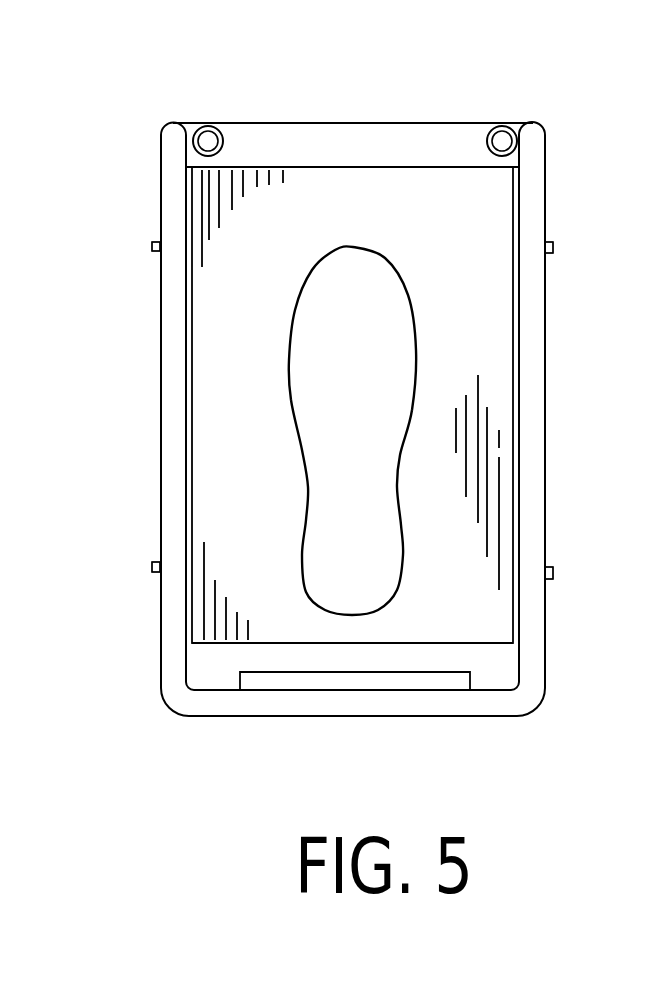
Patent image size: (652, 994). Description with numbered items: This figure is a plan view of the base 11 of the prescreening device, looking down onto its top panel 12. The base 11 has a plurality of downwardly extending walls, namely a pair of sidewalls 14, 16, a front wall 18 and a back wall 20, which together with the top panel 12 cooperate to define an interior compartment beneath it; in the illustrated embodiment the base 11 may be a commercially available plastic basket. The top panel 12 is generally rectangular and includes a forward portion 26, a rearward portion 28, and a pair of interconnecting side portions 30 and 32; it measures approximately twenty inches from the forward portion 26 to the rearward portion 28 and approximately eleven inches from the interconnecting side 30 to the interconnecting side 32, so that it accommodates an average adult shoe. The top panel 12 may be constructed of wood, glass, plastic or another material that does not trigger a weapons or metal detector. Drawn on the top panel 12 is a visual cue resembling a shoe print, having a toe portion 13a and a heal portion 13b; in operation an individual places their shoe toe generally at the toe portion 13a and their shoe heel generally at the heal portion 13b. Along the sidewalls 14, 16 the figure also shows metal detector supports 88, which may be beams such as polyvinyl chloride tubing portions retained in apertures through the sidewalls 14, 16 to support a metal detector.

The base 11 is at (570, 133).
The top panel 12 is at (267, 303).
The toe portion 13a is at (338, 293).
The heal portion 13b is at (347, 590).
The sidewall 14 is at (158, 637).
The sidewall 16 is at (548, 630).
The front wall 18 is at (357, 719).
The back wall 20 is at (320, 118).
The forward portion 26 is at (455, 623).
The rearward portion 28 is at (430, 203).
The interconnecting side portion 30 is at (488, 318).
The interconnecting side portion 32 is at (222, 438).
The metal detector support 88 is at (152, 246).